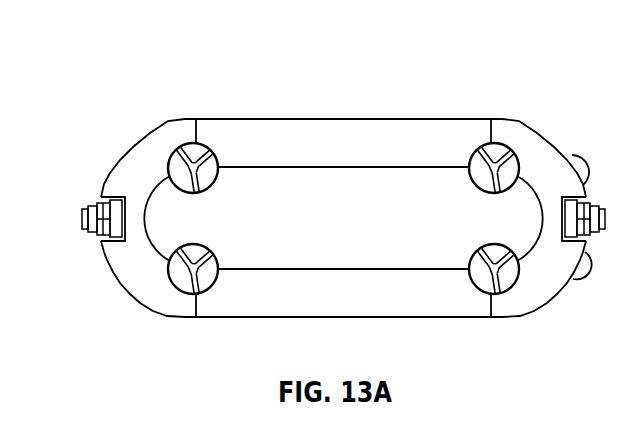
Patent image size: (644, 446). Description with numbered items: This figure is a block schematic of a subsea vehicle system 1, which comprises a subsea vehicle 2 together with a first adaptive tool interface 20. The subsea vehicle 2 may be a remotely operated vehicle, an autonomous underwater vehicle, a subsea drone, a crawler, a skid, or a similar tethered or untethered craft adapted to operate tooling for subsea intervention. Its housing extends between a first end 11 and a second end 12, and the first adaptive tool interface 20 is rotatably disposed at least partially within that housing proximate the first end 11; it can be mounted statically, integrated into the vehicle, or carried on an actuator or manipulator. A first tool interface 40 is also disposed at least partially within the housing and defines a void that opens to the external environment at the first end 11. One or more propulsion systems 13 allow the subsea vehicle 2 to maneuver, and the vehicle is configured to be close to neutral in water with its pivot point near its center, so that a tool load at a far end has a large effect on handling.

The subsea vehicle system 1 is at (97, 130).
The subsea vehicle 2 is at (312, 110).
The first end 11 is at (133, 277).
The second end 12 is at (553, 137).
The propulsion systems 13 is at (506, 262).
The first adaptive tool interface 20 is at (585, 200).
The first tool interface 40 is at (92, 240).